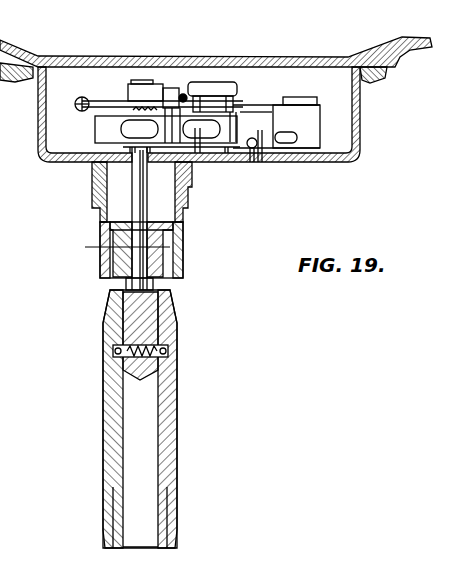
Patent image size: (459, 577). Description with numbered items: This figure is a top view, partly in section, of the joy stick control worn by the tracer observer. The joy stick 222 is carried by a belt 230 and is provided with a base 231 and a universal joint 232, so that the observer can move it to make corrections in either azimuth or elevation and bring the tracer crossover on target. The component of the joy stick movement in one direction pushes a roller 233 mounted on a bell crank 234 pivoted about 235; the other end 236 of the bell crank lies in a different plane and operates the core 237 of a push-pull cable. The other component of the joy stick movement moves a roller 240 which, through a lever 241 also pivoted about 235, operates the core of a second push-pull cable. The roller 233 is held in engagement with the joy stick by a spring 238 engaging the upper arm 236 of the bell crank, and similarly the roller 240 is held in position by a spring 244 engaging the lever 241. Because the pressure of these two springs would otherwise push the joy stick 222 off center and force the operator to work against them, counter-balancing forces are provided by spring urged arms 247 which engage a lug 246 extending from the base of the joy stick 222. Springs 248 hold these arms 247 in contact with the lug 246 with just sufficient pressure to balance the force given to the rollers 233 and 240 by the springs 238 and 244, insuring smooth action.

The belt 230 is at (23, 50).
The base 231 is at (360, 137).
The universal joint 232 is at (112, 247).
The joy stick 222 is at (175, 433).
The springs 248 is at (78, 98).
The core 237 is at (128, 88).
The lug 246 is at (167, 90).
The spring 238 is at (183, 93).
The pivot 235 is at (222, 84).
The other end of bell crank 236 is at (194, 90).
The roller 240 is at (121, 130).
The spring urged arms 247 is at (248, 105).
The bell crank 234 is at (234, 118).
The roller 233 is at (195, 140).
The spring 244 is at (252, 163).
The lever 241 is at (259, 163).